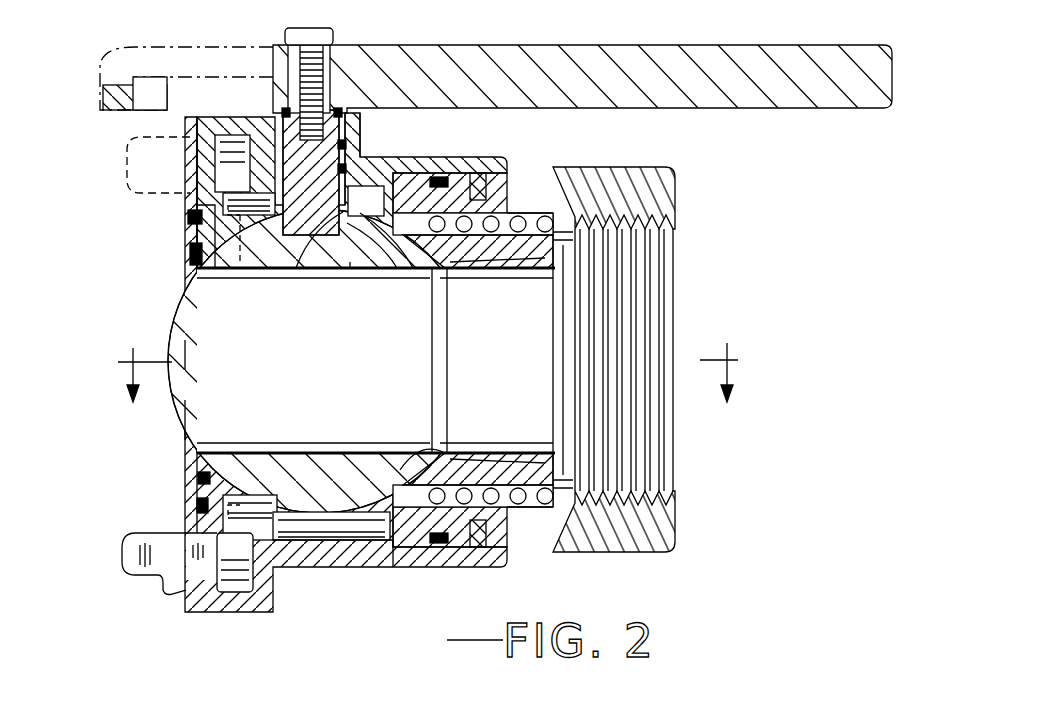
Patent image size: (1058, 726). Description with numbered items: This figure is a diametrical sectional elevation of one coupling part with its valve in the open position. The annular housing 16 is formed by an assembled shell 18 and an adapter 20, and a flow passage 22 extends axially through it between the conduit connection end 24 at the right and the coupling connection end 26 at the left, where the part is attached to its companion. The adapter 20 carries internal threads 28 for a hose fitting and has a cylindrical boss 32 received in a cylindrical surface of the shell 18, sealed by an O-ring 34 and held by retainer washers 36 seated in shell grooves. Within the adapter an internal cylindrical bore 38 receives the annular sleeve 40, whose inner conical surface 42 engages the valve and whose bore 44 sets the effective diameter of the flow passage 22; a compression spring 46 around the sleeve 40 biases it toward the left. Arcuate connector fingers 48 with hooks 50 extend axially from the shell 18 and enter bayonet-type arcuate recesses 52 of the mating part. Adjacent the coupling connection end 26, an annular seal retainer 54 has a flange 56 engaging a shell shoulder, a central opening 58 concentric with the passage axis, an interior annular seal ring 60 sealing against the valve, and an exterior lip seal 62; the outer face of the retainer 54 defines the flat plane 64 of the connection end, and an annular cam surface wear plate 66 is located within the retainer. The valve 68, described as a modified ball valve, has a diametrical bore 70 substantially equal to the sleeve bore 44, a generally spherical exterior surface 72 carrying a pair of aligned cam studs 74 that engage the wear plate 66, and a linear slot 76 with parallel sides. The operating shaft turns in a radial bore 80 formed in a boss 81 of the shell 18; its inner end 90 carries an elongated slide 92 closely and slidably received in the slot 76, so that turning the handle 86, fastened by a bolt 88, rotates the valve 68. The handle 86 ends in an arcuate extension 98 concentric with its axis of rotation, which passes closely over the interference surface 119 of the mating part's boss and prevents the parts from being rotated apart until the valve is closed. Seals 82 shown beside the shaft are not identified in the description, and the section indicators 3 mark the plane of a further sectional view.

The section line 3- 3 is at (428, 381).
The annular housing 16 is at (340, 575).
The shell 18 is at (317, 568).
The adapter 20 is at (630, 552).
The flow passage 22 is at (380, 213).
The conduit connection end 24 is at (680, 528).
The coupling connection end 26 is at (188, 420).
The threads 28 is at (665, 242).
The cylindrical boss 32 is at (425, 545).
The O-ring 34 is at (452, 548).
The retainer washers 36 is at (513, 533).
The internal cylindrical bore 38 is at (512, 210).
The annular sleeve 40 is at (376, 360).
The inner conical surface 42 is at (474, 418).
The sleeve bore 44 is at (510, 458).
The compression spring 46 is at (472, 268).
The arcuate connector fingers 48 is at (133, 538).
The hooks 50 is at (172, 585).
The arcuate recesses 52 is at (225, 200).
The annular seal retainer 54 is at (205, 255).
The flange 56 is at (250, 508).
The central opening 58 is at (190, 290).
The interior annular seal ring 60 is at (225, 460).
The lip seal 62 is at (187, 498).
The plane 64 is at (190, 350).
The annular cam surface wear plate 66 is at (205, 230).
The valve 68 is at (400, 470).
The diametrical bore 70 is at (353, 440).
The exterior surface 72 is at (377, 562).
The cam studs 74 is at (250, 302).
The linear slot 76 is at (402, 270).
The radial bore 80 is at (283, 140).
The boss 81 is at (360, 158).
The stem seals 82 is at (362, 160).
The handle 86 is at (603, 46).
The bolt 88 is at (352, 11).
The inner end of the shaft 90 is at (310, 292).
The slide 92 is at (355, 292).
The arcuate extension 98 is at (105, 112).
The boss surface 119 is at (190, 110).